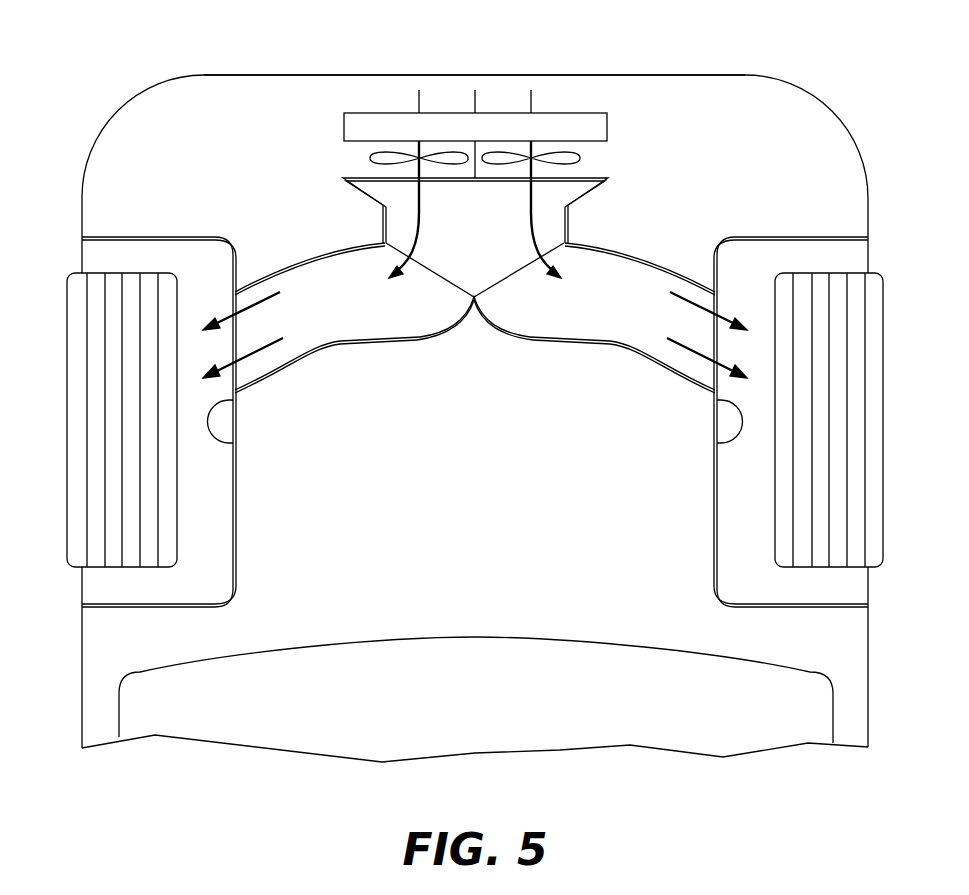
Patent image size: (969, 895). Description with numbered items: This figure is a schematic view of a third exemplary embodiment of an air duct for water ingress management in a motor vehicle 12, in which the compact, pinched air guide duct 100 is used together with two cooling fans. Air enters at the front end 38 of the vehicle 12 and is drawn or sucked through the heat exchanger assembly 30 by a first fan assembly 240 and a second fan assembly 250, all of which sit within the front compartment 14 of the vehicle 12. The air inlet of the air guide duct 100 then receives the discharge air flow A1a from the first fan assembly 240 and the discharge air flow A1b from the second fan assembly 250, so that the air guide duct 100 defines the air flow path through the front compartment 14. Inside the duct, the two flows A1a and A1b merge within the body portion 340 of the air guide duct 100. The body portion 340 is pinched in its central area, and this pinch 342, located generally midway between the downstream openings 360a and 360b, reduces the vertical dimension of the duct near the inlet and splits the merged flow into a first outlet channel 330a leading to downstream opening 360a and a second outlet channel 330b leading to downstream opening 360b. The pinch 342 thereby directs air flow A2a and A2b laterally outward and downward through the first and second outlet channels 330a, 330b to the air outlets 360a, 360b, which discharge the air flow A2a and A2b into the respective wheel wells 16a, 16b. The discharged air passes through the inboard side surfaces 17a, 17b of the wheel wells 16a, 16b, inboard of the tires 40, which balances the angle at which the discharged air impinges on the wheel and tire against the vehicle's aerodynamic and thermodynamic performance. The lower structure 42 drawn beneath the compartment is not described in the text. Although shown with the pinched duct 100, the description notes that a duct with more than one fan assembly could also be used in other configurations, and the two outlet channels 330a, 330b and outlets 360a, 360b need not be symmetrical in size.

The motor vehicle 12 is at (819, 64).
The front end 38 is at (307, 75).
The housing base 42 is at (660, 727).
The wheel well 16a is at (105, 590).
The wheel well 16b is at (850, 587).
The tires 40 is at (97, 352).
The heat exchanger assembly 30 is at (607, 128).
The first fan assembly 240 is at (380, 157).
The second fan assembly 250 is at (580, 158).
The air guide duct 100 is at (423, 341).
The body portion 340 is at (510, 283).
The pinch 342 is at (476, 307).
The downstream opening 360a is at (243, 290).
The downstream opening 360b is at (707, 290).
The first outlet channel 330a is at (327, 350).
The second outlet channel 330b is at (623, 350).
The inboard side surface 17a is at (218, 442).
The inboard side surface 17b is at (732, 442).
The discharge air flow A1a is at (424, 209).
The discharge air flow A1b is at (526, 209).
The air flow A2a is at (243, 335).
The air flow A2b is at (707, 335).
The front compartment 14 is at (486, 532).